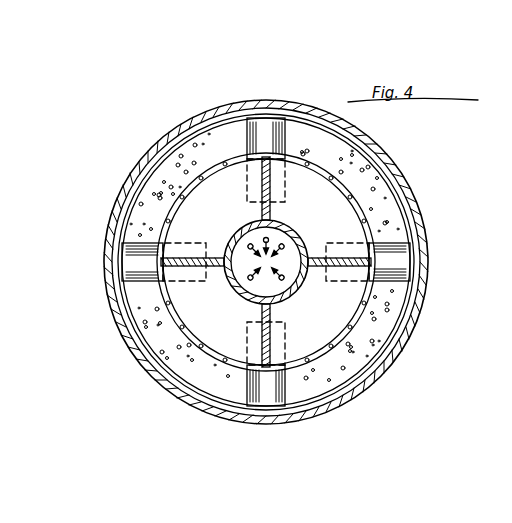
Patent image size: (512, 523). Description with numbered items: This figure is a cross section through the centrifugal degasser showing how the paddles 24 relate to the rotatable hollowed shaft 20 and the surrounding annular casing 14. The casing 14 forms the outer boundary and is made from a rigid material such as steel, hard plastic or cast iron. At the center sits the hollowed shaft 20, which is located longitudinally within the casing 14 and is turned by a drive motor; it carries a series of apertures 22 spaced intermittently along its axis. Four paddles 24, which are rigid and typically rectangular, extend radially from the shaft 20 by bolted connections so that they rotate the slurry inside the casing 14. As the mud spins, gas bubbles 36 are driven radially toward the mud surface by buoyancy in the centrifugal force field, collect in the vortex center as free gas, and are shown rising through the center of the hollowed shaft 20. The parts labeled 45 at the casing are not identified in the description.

The casing 14 is at (232, 101).
The rotatable hollowed shaft 20 is at (247, 222).
The apertures 22 is at (238, 300).
The paddles 24 is at (208, 250).
The gas bubbles 36 is at (250, 258).
The mounting brackets 45 is at (276, 135).